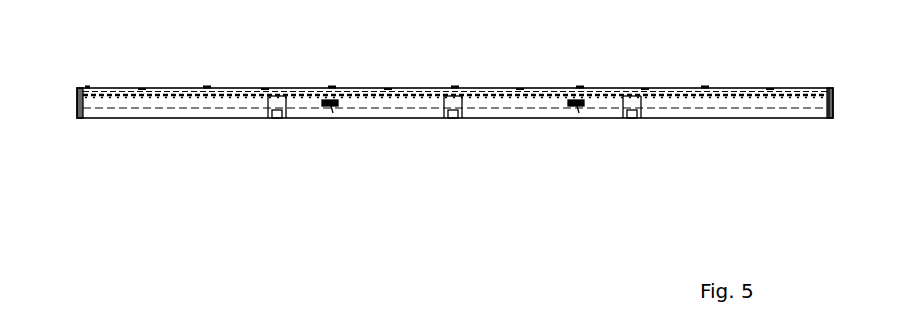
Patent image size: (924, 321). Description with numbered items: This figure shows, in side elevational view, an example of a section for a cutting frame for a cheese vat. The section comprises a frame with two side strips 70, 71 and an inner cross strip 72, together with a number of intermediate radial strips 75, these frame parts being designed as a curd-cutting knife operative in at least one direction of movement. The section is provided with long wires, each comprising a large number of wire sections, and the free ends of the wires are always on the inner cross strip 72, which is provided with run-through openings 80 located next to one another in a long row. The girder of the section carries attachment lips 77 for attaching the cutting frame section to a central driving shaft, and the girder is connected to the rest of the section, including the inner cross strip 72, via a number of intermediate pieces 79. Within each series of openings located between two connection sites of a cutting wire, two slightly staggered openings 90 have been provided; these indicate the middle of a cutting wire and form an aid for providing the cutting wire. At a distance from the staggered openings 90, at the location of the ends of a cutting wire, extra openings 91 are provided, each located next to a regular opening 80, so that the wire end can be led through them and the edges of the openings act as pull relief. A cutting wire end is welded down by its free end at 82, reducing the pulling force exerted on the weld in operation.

The side strip 70 is at (76, 103).
The side strip 71 is at (838, 105).
The inner cross strip 72 is at (140, 113).
The intermediate radial strip 75 is at (473, 162).
The attachment lip 77 is at (277, 115).
The intermediate piece 79 is at (328, 107).
The run-through opening 80 is at (187, 100).
The free end of cutting wire 82 is at (832, 86).
The staggered openings 90 is at (142, 89).
The extra opening 91 is at (87, 88).